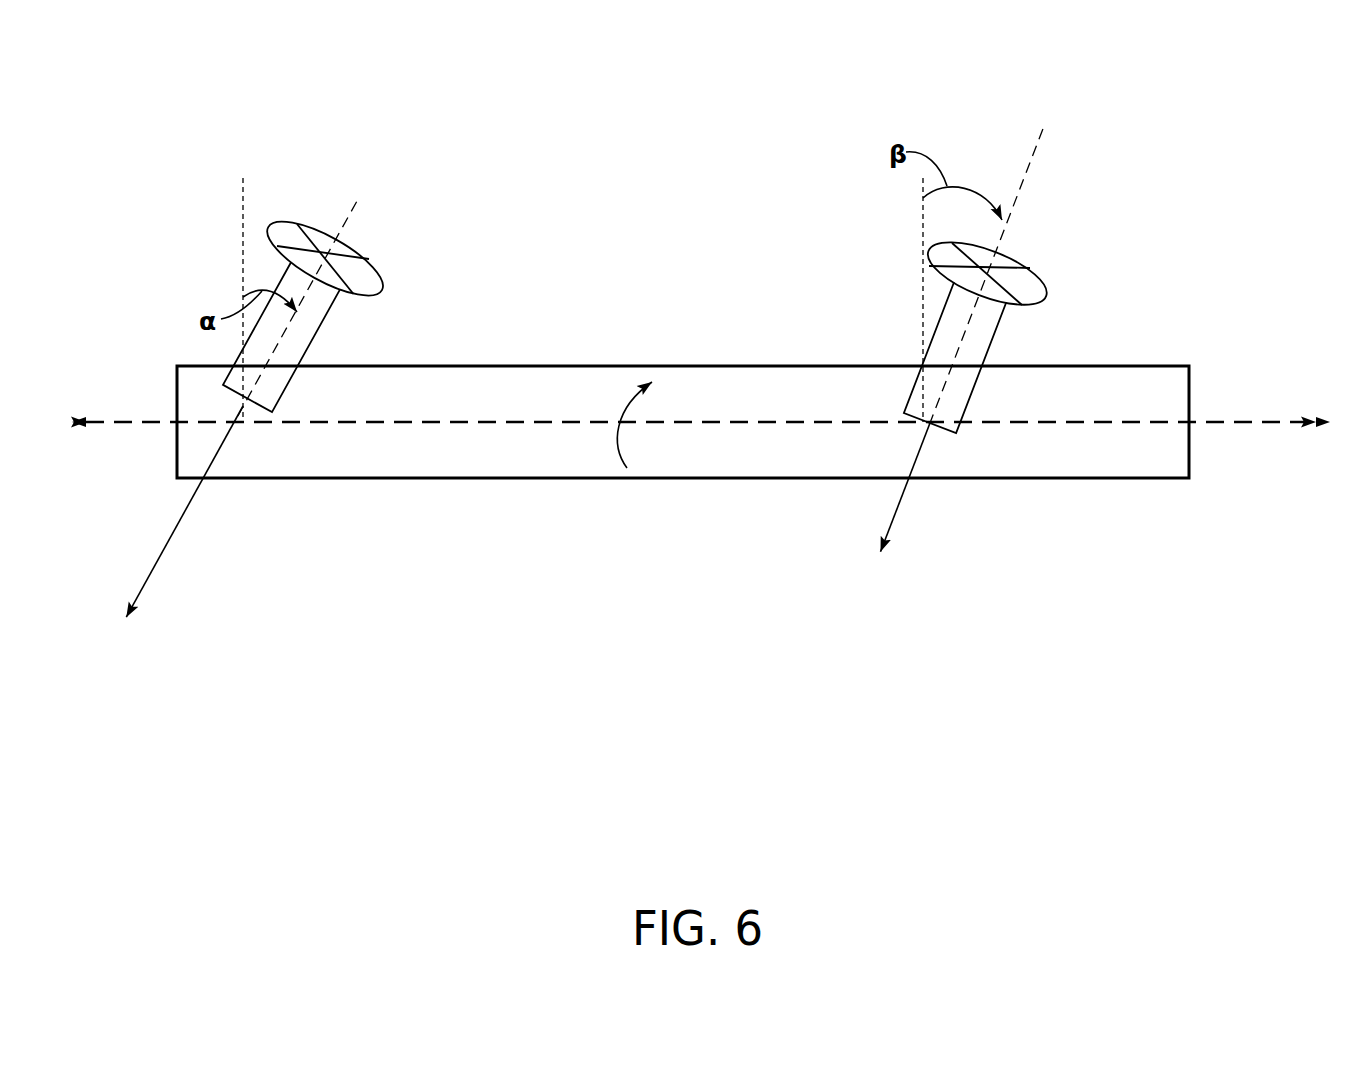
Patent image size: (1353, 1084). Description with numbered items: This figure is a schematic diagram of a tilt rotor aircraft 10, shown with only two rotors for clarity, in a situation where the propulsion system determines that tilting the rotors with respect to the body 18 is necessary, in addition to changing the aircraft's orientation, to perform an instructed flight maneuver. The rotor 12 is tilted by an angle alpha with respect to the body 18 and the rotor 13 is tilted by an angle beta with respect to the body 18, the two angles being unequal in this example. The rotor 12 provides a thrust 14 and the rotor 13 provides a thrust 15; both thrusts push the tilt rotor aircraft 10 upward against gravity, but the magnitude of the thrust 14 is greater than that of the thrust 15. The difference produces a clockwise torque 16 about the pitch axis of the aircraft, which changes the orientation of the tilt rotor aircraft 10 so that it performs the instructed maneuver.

The tilt rotor aircraft 10 is at (1184, 102).
The rotor 12 is at (396, 240).
The rotor 13 is at (1079, 268).
The thrust 14 is at (184, 524).
The thrust 15 is at (889, 512).
The torque 16 is at (616, 437).
The body 18 is at (479, 466).